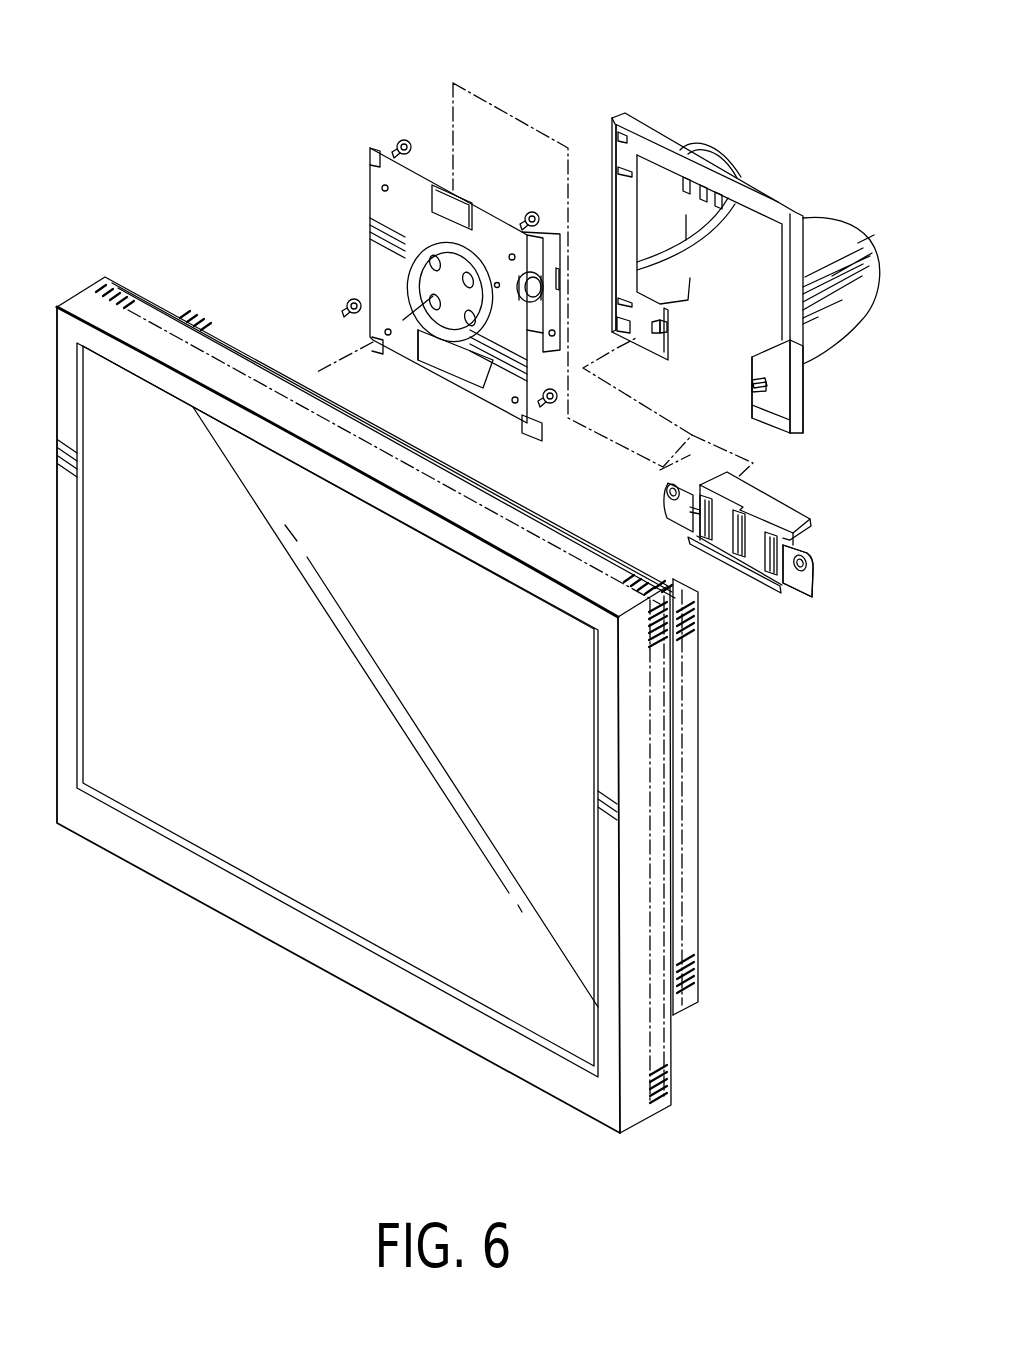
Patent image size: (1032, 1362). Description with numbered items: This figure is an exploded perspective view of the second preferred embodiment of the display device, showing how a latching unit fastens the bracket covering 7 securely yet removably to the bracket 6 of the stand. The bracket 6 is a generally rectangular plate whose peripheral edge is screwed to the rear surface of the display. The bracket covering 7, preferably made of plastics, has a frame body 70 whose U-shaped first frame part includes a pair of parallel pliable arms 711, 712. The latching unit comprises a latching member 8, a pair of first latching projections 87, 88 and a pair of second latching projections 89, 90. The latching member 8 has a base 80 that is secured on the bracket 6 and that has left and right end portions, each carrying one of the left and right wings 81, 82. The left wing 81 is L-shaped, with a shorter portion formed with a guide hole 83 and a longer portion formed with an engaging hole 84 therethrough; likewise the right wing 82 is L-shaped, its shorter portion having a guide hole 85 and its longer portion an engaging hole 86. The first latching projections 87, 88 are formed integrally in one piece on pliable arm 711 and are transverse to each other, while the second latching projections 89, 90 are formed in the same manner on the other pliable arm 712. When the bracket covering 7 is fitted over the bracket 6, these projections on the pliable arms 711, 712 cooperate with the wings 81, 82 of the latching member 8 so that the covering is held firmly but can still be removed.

The bracket 6 is at (350, 247).
The bracket covering 7 is at (667, 120).
The frame body 70 is at (640, 112).
The pliable arm 711 is at (630, 214).
The pliable arm 712 is at (778, 402).
The first latching projection 87 is at (664, 330).
The first latching projection 88 is at (658, 330).
The second latching projection 89 is at (757, 380).
The second latching projection 90 is at (752, 389).
The latching member 8 is at (757, 592).
The base 80 is at (752, 530).
The left wing 81 is at (678, 540).
The right wing 82 is at (820, 575).
The guide hole 83 is at (672, 524).
The engaging hole 84 is at (685, 507).
The guide hole 85 is at (780, 585).
The engaging hole 86 is at (789, 565).